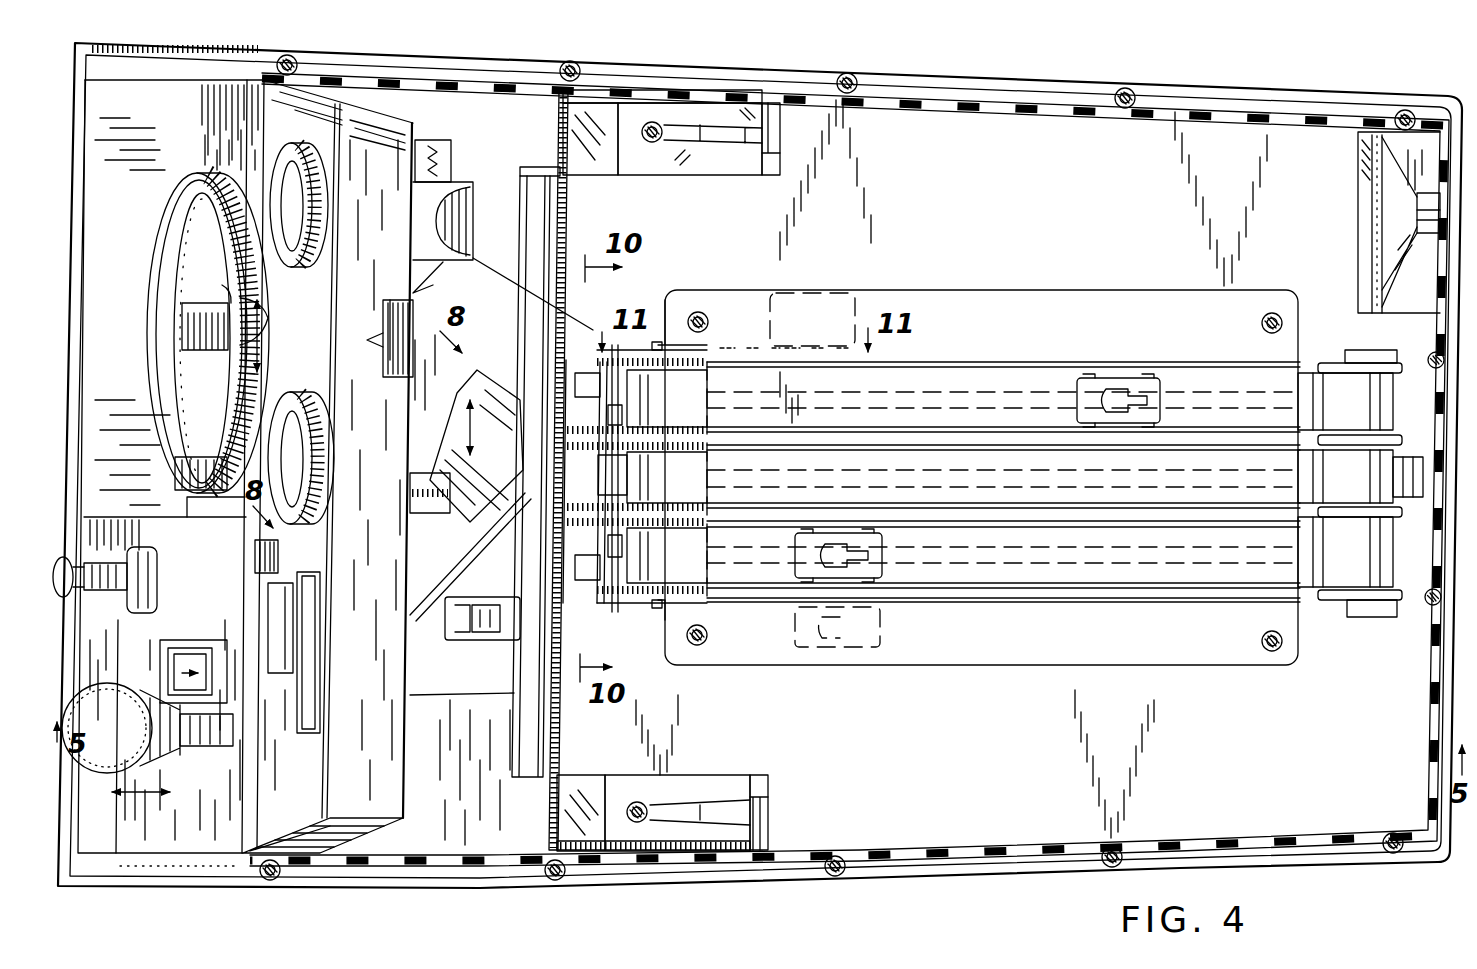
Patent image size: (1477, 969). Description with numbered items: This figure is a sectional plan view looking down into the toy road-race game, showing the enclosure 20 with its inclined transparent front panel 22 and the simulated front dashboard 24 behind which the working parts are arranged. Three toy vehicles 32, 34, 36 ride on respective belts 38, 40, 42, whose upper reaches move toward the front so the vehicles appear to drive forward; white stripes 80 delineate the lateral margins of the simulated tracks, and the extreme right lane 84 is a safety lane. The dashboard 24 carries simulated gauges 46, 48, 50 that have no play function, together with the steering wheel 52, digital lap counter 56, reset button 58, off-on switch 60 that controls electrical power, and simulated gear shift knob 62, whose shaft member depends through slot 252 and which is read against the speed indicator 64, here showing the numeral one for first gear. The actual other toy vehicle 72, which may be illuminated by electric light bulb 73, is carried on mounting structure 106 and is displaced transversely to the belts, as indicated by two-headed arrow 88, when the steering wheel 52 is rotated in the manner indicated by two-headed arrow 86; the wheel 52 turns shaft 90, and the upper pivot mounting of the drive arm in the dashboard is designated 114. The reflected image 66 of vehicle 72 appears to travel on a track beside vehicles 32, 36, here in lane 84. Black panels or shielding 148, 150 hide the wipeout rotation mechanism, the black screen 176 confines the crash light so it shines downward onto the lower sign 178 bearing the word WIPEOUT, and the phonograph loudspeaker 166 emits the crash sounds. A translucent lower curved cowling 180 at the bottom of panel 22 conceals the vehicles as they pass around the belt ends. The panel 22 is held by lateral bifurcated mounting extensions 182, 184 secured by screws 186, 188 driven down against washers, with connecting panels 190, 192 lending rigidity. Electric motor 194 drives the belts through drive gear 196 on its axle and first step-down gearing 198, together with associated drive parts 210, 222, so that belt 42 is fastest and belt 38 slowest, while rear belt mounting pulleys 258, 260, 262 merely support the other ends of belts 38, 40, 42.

The enclosure 20 is at (995, 855).
The transparent front panel 22 is at (552, 808).
The simulated front dashboard 24 is at (300, 767).
The toy vehicle 32 is at (880, 578).
The toy vehicle 34 is at (632, 477).
The toy vehicle 36 is at (1147, 385).
The belt 38 is at (1112, 573).
The belt 40 is at (963, 500).
The belt 42 is at (1042, 380).
The simulated gauge 46 is at (322, 604).
The simulated gauge 48 is at (323, 457).
The simulated gauge 50 is at (322, 182).
The steering wheel 52 is at (148, 318).
The digital lap counter 56 is at (273, 612).
The reset button 58 is at (255, 556).
The off-on switch 60 is at (153, 570).
The simulated gear shift knob 62 is at (172, 752).
The speed indicator 64 is at (212, 668).
The image of the other toy vehicle 66 is at (880, 642).
The other toy vehicle 72 is at (448, 622).
The electric light bulb 73 is at (490, 628).
The white stripes 80 is at (1227, 408).
The extreme right lane 84 is at (990, 666).
The two-headed arrow 86 is at (250, 335).
The two-headed arrow 88 is at (487, 427).
The shaft 90 is at (213, 280).
The mounting structure 106 is at (433, 514).
The upper mounting of the pivot 114 is at (382, 354).
The black colored panel or shielding 148 is at (492, 388).
The black colored panel or shielding 150 is at (416, 582).
The phonograph loudspeaker 166 is at (1390, 178).
The screen 176 is at (458, 218).
The lower sign 178 is at (452, 162).
The lower curved cowling 180 is at (518, 738).
The lateral bifurcated mounting extension 182 is at (723, 170).
The lateral bifurcated mounting extension 184 is at (738, 780).
The pivot screw 186 is at (653, 143).
The screw 188 is at (645, 800).
The connecting panel 190 is at (585, 111).
The connecting panel 192 is at (658, 851).
The electric motor 194 is at (816, 300).
The drive gear 196 is at (817, 332).
The first step-down gearing 198 is at (749, 332).
The bracket 210 is at (663, 342).
The bracket 222 is at (607, 387).
The slot 252 is at (216, 746).
The rear belt mounting pulley 258 is at (1393, 620).
The rear belt mounting pulley 260 is at (1393, 503).
The rear belt mounting pulley 262 is at (1394, 366).